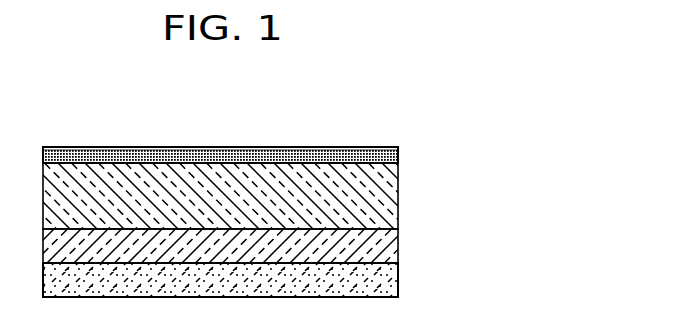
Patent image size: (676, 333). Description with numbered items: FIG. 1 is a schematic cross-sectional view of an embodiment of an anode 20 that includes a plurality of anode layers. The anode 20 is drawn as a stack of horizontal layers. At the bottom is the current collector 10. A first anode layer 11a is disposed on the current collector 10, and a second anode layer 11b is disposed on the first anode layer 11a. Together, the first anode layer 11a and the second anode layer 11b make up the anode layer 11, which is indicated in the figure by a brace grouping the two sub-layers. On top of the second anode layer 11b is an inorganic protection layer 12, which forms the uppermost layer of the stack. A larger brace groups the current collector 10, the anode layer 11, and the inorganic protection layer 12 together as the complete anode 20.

The anode 20 is at (287, 221).
The inorganic protection layer 12 is at (396, 157).
The anode layer 11 is at (263, 213).
The second anode layer 11b is at (388, 201).
The first anode layer 11a is at (388, 244).
The current collector 10 is at (283, 280).